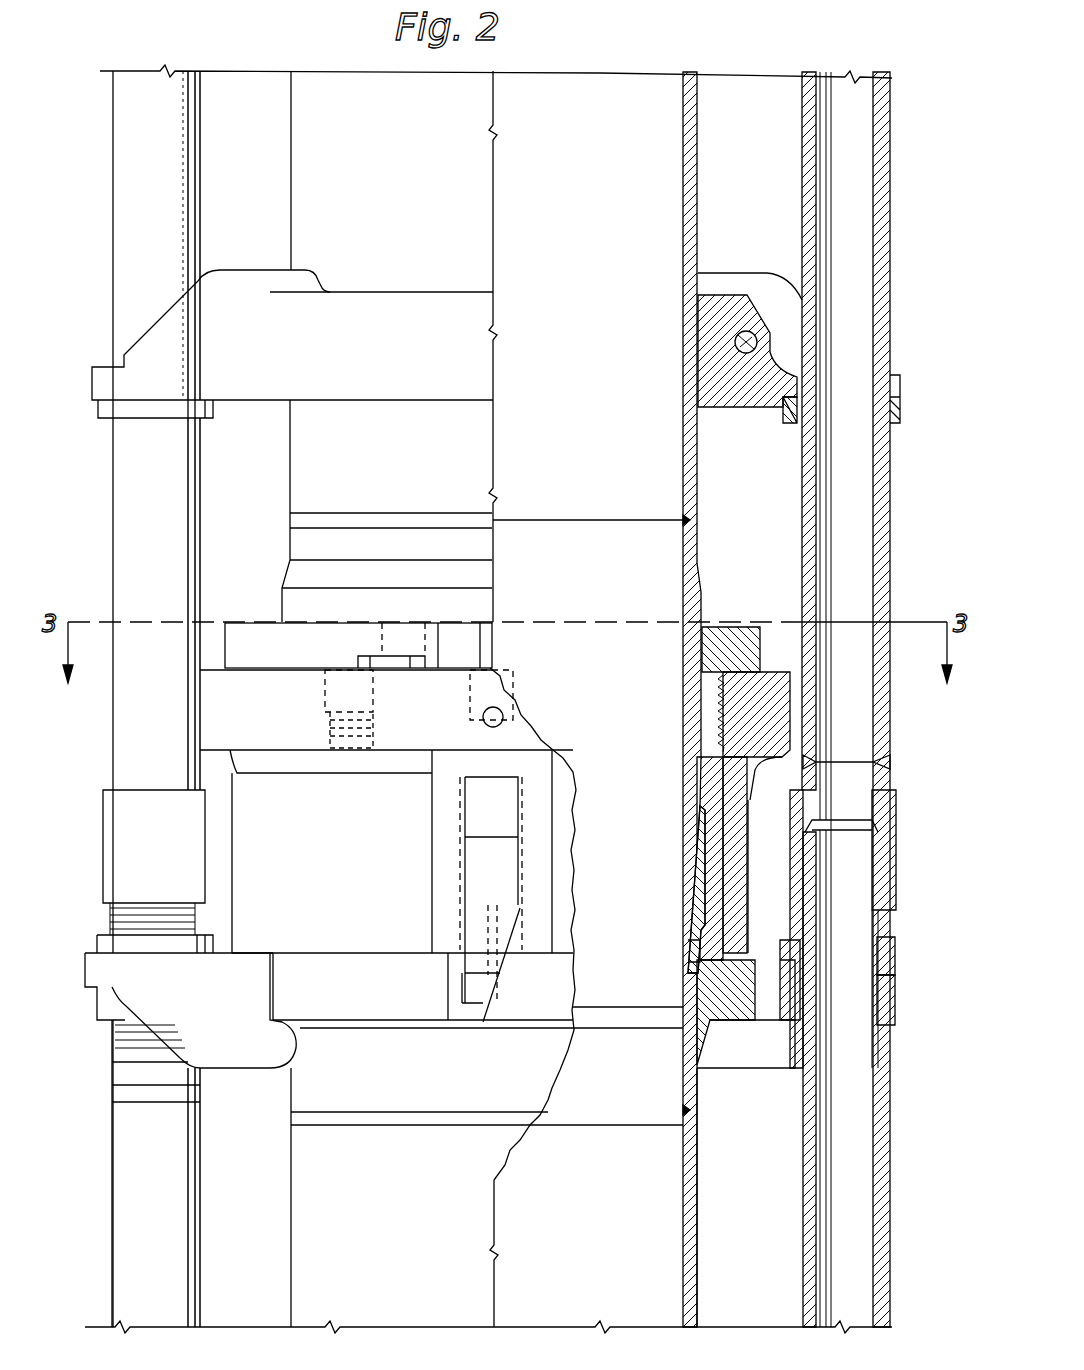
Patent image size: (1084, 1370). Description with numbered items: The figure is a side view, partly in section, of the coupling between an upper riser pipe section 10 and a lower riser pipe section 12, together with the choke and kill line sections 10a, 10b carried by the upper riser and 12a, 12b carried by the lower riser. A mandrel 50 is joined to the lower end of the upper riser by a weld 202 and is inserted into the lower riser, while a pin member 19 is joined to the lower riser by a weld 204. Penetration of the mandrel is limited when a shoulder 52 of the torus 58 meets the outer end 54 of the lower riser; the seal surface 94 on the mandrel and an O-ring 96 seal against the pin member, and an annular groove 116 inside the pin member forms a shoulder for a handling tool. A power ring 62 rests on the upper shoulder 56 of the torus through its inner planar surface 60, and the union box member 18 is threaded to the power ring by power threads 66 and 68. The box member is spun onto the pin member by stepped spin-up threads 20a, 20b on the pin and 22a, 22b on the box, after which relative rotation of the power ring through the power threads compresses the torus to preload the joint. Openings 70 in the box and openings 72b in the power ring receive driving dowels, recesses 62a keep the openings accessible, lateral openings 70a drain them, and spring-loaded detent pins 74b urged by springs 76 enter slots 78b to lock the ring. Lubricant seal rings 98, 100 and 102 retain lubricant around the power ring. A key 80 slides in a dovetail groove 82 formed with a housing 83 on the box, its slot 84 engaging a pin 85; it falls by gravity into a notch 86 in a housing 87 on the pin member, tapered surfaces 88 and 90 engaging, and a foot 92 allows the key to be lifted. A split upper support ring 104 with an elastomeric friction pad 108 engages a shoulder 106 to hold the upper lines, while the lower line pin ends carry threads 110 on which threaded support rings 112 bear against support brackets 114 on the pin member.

The upper riser pipe section 10 is at (710, 146).
The upper choke and kill line section 10a is at (802, 176).
The upper choke and kill line section 10b is at (210, 180).
The lower riser pipe section 12 is at (710, 1236).
The lower choke and kill line section 12a is at (795, 1164).
The lower choke and kill line section 12b is at (210, 1258).
The union box member 18 is at (748, 798).
The pin member 19 is at (742, 1018).
The first set of spin-up threads on pin member 20a is at (715, 862).
The second set of spin-up threads on pin member 20b is at (700, 930).
The first set of spin-up threads on box member 22a is at (725, 880).
The second set of spin-up threads on box member 22b is at (725, 905).
The mandrel portion 50 is at (690, 946).
The shoulder of torus 52 is at (712, 800).
The outer end of lower riser pipe section 54 is at (700, 809).
The upper shoulder of torus 56 is at (700, 762).
The torus 58 is at (703, 774).
The inner circular planar surface 60 is at (720, 733).
The power ring 62 is at (740, 628).
The recesses 62a is at (495, 633).
The power threads on power ring 66 is at (720, 705).
The power threads on box member 68 is at (790, 700).
The openings 70 is at (470, 682).
The lateral openings 70a is at (483, 717).
The openings 72b is at (388, 625).
The spring-loaded detent pins 74b is at (325, 688).
The springs 76 is at (330, 723).
The slots 78b is at (358, 658).
The key 80 is at (470, 858).
The groove 82 is at (465, 808).
The housing 83 is at (445, 835).
The slot 84 is at (488, 905).
The pin 85 is at (497, 935).
The notch 86 is at (448, 1018).
The housing 87 is at (512, 1015).
The tapered surface of key 88 is at (500, 960).
The tapered surface of notch 90 is at (483, 1020).
The foot 92 is at (475, 988).
The seal surface 94 is at (680, 995).
The O-ring 96 is at (695, 843).
The lubricant seal ring 98 is at (700, 628).
The lubricant seal ring 100 is at (752, 775).
The lubricant seal ring 102 is at (718, 673).
The upper support ring 104 is at (740, 407).
The shoulder 106 is at (790, 425).
The elastomeric friction pad 108 is at (700, 295).
The threads 110 is at (805, 920).
The threaded support ring 112 is at (900, 940).
The support bracket 114 is at (898, 985).
The annular groove 116 is at (700, 957).
The weld 202 is at (690, 522).
The weld 204 is at (700, 1112).